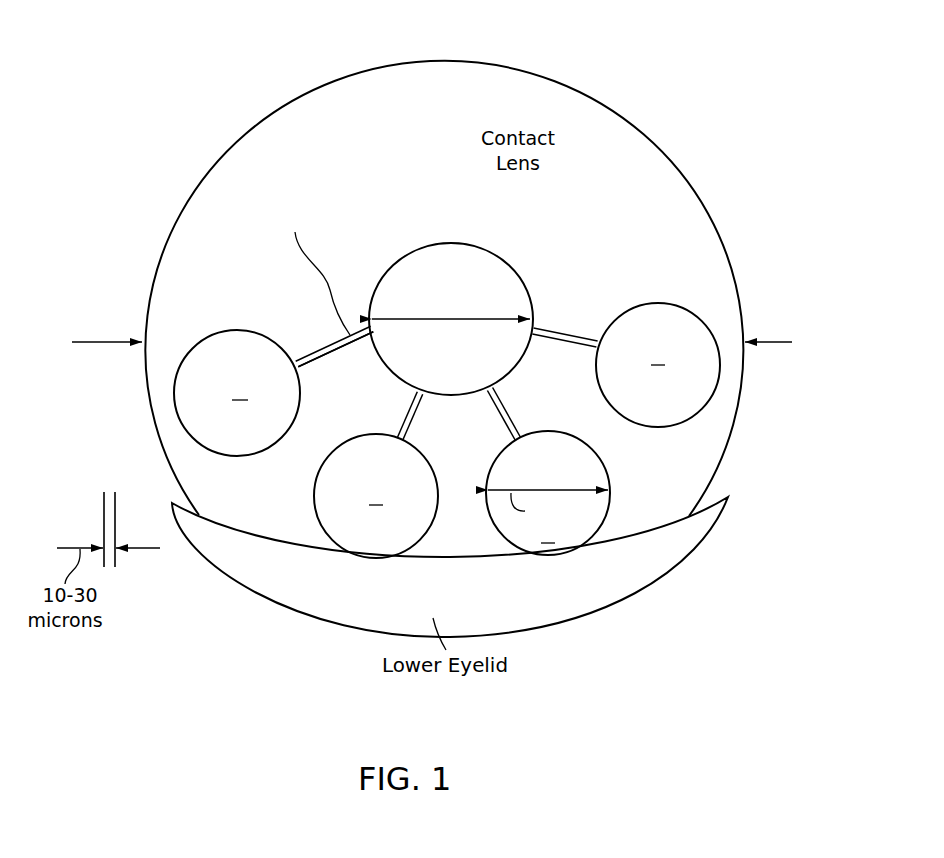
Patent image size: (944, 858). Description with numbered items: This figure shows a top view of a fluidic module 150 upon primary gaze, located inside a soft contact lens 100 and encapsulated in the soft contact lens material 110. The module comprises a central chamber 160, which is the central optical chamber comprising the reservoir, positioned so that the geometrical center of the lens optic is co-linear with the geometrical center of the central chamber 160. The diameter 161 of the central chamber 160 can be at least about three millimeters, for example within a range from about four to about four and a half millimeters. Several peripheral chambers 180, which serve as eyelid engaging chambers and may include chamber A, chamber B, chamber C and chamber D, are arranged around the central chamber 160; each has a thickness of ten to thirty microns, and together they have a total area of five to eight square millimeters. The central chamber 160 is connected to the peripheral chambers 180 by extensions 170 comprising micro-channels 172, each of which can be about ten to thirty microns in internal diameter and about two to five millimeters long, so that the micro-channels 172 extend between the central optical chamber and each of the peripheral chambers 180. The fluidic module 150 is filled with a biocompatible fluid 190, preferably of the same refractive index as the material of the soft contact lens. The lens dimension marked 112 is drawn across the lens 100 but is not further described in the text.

The soft contact lens 100 is at (575, 48).
The soft contact lens material 110 is at (600, 118).
The lens diameter (11-14 mm) 112 is at (112, 346).
The fluidic module 150 is at (578, 227).
The central chamber 160 is at (434, 243).
The diameter of the central chamber 161 is at (390, 316).
The extensions 170 is at (569, 315).
The micro-channels 172 is at (322, 359).
The peripheral chambers 180 is at (640, 390).
The biocompatible fluid 190 is at (484, 266).